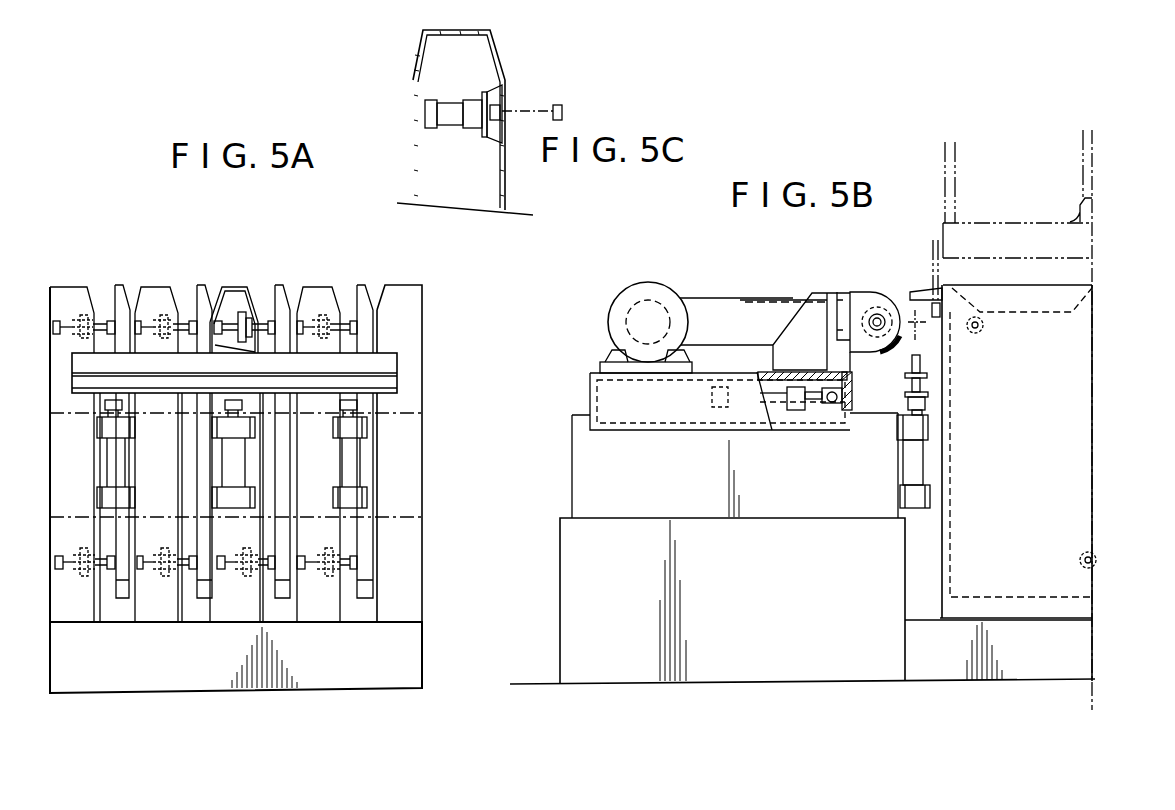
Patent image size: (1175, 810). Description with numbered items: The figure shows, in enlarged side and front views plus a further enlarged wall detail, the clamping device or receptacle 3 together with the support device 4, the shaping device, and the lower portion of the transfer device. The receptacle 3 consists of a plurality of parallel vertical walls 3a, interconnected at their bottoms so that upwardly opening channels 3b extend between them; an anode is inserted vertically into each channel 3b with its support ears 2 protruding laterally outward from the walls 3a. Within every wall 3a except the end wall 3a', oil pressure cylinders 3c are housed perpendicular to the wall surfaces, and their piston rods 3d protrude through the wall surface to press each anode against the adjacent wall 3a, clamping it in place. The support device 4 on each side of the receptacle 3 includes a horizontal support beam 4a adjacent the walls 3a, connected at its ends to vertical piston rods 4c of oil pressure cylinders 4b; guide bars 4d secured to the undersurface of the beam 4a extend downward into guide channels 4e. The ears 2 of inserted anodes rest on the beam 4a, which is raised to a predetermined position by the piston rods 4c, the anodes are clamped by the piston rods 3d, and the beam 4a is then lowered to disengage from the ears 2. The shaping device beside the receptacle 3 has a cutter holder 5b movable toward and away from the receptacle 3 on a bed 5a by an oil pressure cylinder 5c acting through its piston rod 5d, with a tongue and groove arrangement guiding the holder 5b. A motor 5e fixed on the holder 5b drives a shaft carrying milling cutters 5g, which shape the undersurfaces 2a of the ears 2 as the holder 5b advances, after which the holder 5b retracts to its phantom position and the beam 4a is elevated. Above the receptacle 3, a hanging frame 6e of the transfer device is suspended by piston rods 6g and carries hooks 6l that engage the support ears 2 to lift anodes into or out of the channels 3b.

In FIG. 5B, the support ear 2 is at (913, 292).
In FIG. 5B, the undersurface of support ear 2a is at (931, 306).
In FIG. 5A, the clamping device or receptacle 3 is at (384, 648).
In FIG. 5B, the clamping device or receptacle 3 is at (1077, 310).
In FIG. 5A, the vertical wall 3a is at (162, 425).
In FIG. 5C, the vertical wall 3a is at (477, 122).
In FIG. 5A, the end wall 3a' is at (421, 438).
In FIG. 5A, the channel 3b is at (340, 285).
In FIG. 5A, the oil pressure cylinder 3c is at (226, 291).
In FIG. 5C, the oil pressure cylinder 3c is at (453, 118).
In FIG. 5A, the piston rod 3d is at (353, 320).
In FIG. 5B, the piston rod 3d is at (983, 323).
In FIG. 5A, the support device 4 is at (259, 450).
In FIG. 5B, the support device 4 is at (943, 438).
In FIG. 5A, the support beam 4a is at (393, 386).
In FIG. 5B, the support beam 4a is at (923, 386).
In FIG. 5A, the oil pressure cylinder 4b is at (112, 463).
In FIG. 5B, the oil pressure cylinder 4b is at (922, 462).
In FIG. 5A, the vertical piston rod 4c is at (353, 410).
In FIG. 5B, the vertical piston rod 4c is at (925, 413).
In FIG. 5A, the guide bar 4d is at (235, 420).
In FIG. 5A, the guide channel 4e is at (240, 460).
In FIG. 5B, the bed 5a is at (593, 510).
In FIG. 5B, the cutter holder 5b is at (597, 375).
In FIG. 5B, the oil pressure cylinder 5c is at (777, 400).
In FIG. 5B, the piston rod 5d is at (813, 403).
In FIG. 5B, the motor 5e is at (677, 290).
In FIG. 5B, the milling cutter 5g is at (878, 306).
In FIG. 5B, the hanging frame 6e is at (1008, 240).
In FIG. 5B, the piston rod 6g is at (1088, 195).
In FIG. 5B, the hook 6l is at (935, 249).